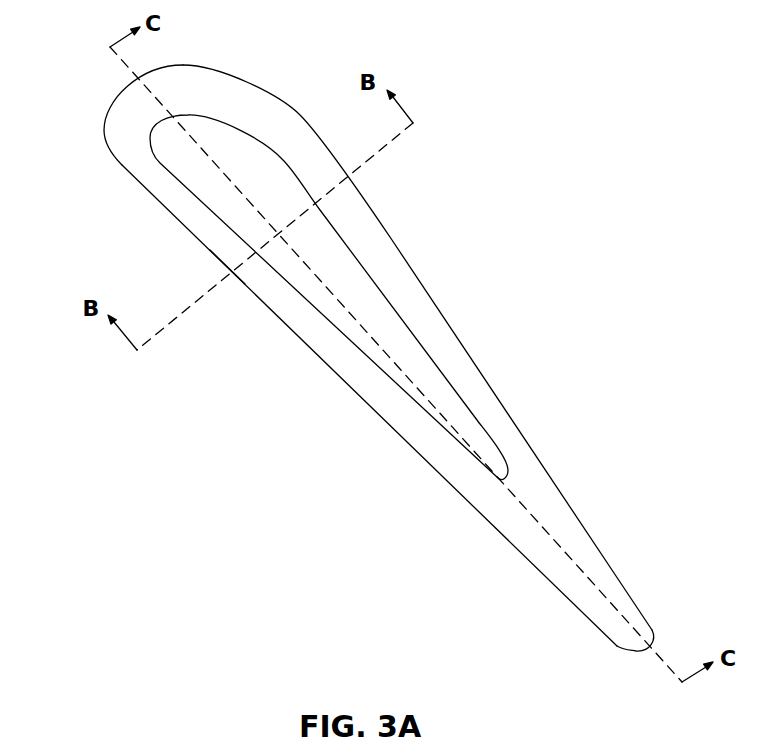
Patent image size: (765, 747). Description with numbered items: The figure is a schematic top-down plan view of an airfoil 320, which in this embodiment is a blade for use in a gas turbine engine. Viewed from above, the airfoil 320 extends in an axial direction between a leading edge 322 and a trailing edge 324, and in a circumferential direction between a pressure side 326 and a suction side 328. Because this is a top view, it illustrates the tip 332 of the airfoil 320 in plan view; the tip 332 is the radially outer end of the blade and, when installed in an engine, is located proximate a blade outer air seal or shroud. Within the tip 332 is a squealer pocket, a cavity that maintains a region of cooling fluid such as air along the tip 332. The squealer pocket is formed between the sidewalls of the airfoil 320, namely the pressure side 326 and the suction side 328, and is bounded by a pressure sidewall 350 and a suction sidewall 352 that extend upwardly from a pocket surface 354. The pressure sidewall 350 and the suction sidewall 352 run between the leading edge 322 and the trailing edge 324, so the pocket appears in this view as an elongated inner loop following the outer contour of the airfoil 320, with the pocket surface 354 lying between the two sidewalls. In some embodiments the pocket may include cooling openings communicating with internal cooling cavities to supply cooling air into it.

The airfoil 320 is at (470, 205).
The leading edge 322 is at (123, 93).
The trailing edge 324 is at (647, 650).
The pressure side 326 is at (412, 453).
The suction side 328 is at (510, 413).
The tip 332 is at (222, 261).
The pressure sidewall 350 is at (193, 217).
The suction sidewall 352 is at (417, 303).
The pocket surface 354 is at (234, 157).